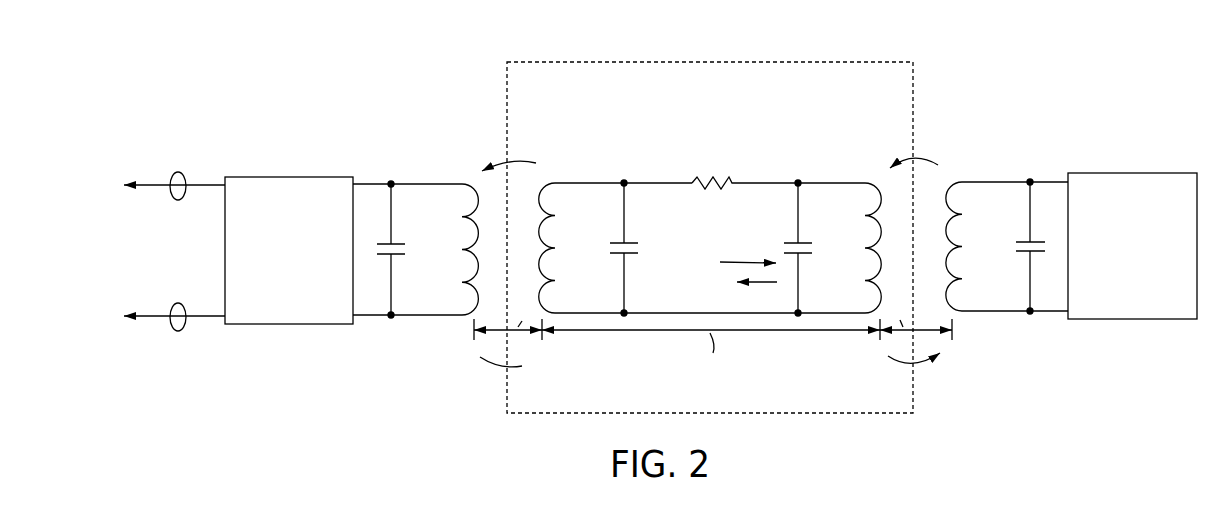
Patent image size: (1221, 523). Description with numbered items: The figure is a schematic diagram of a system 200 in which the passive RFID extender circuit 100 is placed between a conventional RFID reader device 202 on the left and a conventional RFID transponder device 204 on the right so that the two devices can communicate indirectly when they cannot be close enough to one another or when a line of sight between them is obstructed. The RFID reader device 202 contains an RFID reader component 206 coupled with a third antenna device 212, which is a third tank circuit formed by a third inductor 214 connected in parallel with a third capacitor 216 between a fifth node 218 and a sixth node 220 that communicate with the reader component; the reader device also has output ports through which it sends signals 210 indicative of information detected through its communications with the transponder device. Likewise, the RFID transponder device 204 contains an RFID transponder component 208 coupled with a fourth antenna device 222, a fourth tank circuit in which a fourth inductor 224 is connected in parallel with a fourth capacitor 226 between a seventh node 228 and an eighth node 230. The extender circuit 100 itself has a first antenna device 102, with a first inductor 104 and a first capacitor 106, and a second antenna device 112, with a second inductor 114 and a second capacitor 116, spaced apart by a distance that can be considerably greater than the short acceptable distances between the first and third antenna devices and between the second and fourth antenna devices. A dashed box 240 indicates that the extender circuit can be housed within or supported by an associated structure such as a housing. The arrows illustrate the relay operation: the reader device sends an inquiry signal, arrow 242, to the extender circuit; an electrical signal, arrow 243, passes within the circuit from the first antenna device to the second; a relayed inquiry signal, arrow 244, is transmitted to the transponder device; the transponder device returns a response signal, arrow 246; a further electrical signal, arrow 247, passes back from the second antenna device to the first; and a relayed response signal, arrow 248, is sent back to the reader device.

The passive RFID extender circuit 100 is at (671, 171).
The first antenna device 102 is at (584, 172).
The first inductor 104 is at (548, 265).
The first capacitor 106 is at (635, 236).
The second antenna device 112 is at (824, 172).
The second inductor 114 is at (877, 263).
The second capacitor 116 is at (788, 236).
The system 200 is at (1026, 113).
The RFID reader device 202 is at (259, 172).
The RFID transponder device 204 is at (1162, 171).
The RFID reader component 206 is at (312, 289).
The RFID transponder component 208 is at (1152, 285).
The signals 210 is at (177, 172).
The third antenna device 212 is at (435, 176).
The third inductor 214 is at (436, 322).
The third capacitor 216 is at (405, 263).
The fifth node 218 is at (391, 181).
The sixth node 220 is at (391, 318).
The fourth antenna device 222 is at (982, 320).
The fourth inductor 224 is at (959, 176).
The fourth capacitor 226 is at (1019, 258).
The seventh node 228 is at (1030, 179).
The eighth node 230 is at (1030, 314).
The dashed box 240 is at (867, 58).
The arrow 242 is at (527, 358).
The arrow 243 is at (727, 264).
The arrow 244 is at (890, 358).
The arrow 246 is at (887, 160).
The arrow 247 is at (727, 289).
The arrow 248 is at (527, 160).